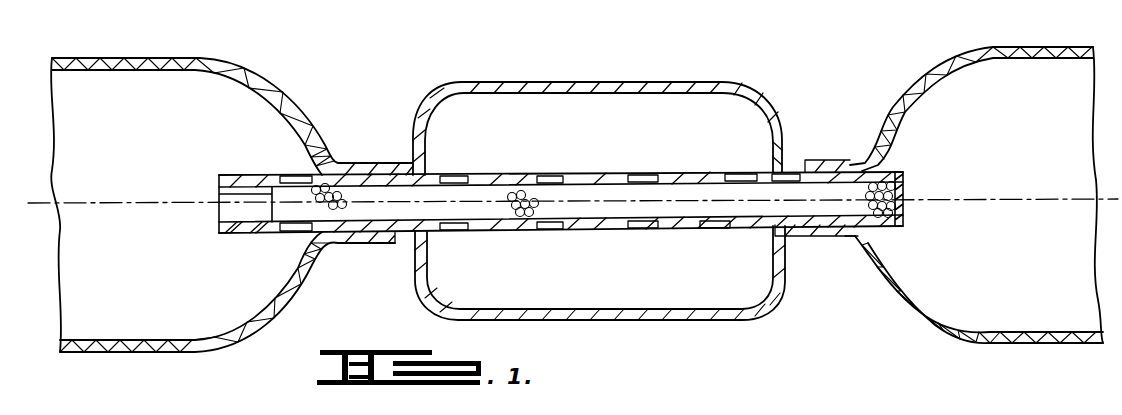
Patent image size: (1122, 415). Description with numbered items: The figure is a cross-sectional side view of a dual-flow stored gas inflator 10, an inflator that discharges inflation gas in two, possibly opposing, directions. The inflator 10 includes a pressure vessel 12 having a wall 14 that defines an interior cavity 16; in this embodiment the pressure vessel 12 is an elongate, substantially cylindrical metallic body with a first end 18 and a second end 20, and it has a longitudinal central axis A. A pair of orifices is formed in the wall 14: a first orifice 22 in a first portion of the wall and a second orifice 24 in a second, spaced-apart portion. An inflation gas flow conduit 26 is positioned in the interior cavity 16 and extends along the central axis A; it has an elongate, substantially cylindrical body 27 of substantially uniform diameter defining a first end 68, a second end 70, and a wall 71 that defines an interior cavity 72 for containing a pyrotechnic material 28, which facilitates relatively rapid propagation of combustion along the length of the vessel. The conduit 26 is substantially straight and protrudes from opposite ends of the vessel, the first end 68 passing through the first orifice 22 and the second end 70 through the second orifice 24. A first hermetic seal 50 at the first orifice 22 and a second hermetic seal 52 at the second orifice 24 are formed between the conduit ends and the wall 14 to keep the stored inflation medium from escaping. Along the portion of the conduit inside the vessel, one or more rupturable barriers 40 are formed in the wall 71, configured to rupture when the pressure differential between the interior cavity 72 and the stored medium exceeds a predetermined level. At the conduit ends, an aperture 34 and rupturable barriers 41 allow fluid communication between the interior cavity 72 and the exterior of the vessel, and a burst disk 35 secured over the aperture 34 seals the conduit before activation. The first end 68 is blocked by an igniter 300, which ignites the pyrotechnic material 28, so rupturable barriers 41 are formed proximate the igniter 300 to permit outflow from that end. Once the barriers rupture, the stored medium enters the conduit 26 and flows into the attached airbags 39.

The dual-flow stored gas inflator 10 is at (442, 69).
The pressure vessel 12 is at (541, 82).
The wall 14 is at (609, 82).
The interior cavity 16 is at (697, 140).
The first end 18 is at (412, 172).
The second end 20 is at (790, 172).
The first orifice 22 is at (412, 237).
The second orifice 24 is at (787, 230).
The inflation gas flow conduit 26 is at (708, 231).
The body 27 is at (681, 229).
The pyrotechnic material 28 is at (514, 215).
The aperture 34 is at (912, 185).
The burst disk 35 is at (906, 216).
The airbag 39 is at (118, 352).
The rupturable barrier 40 is at (735, 177).
The rupturable barrier 41 is at (294, 237).
The first hermetic seal 50 is at (411, 172).
The second hermetic seal 52 is at (807, 170).
The first end 68 is at (238, 236).
The second end 70 is at (870, 232).
The wall 71 is at (589, 176).
The interior cavity 72 is at (628, 213).
The igniter 300 is at (218, 187).
The longitudinal central axis A is at (1030, 198).